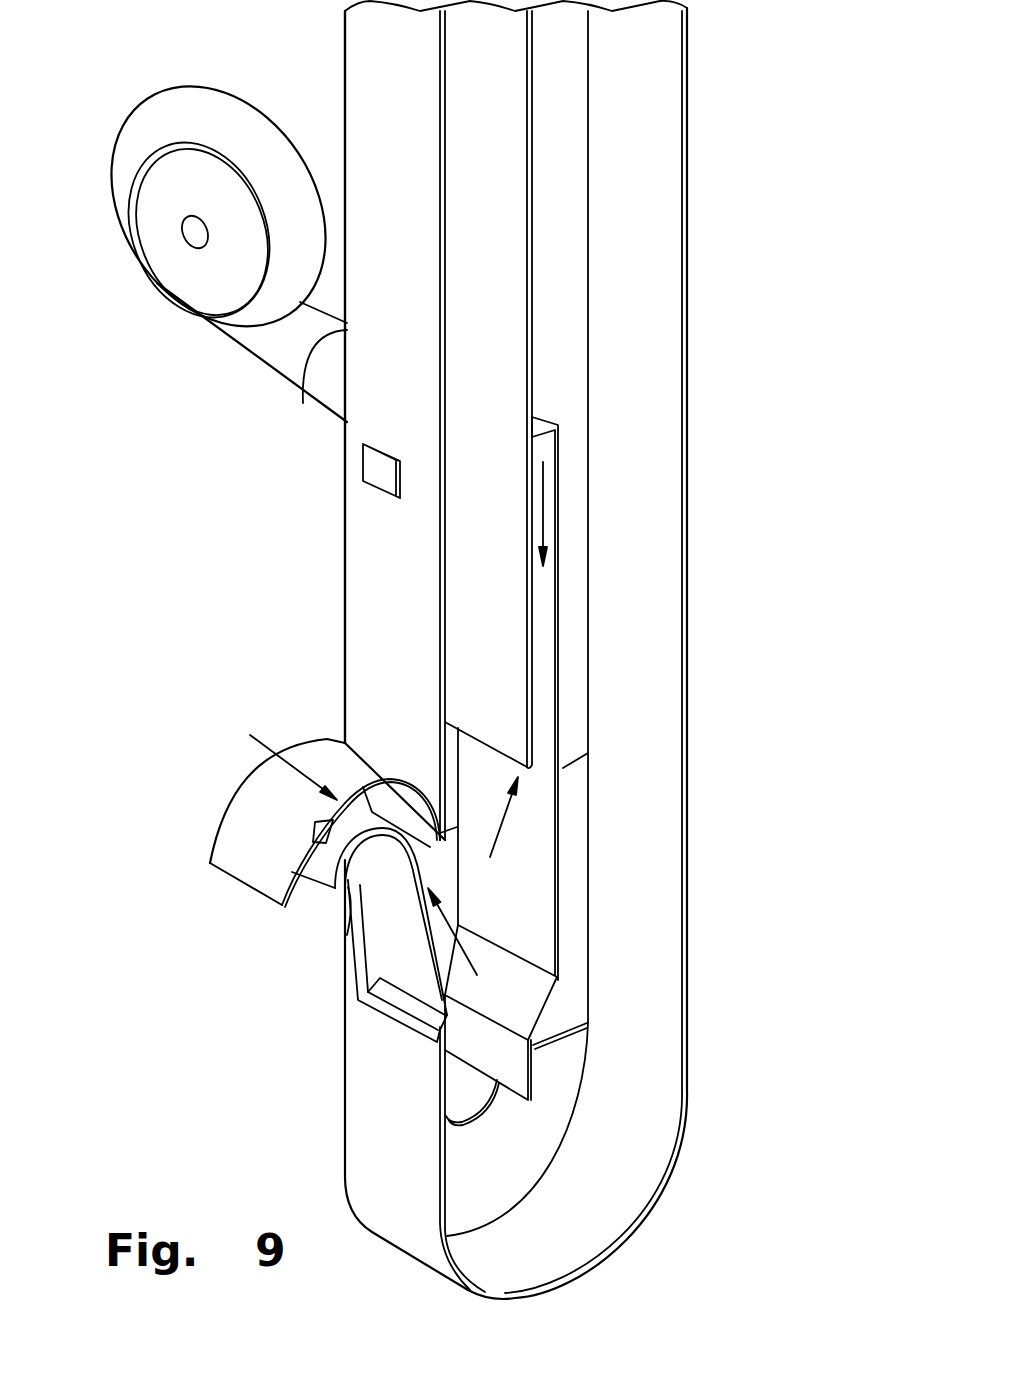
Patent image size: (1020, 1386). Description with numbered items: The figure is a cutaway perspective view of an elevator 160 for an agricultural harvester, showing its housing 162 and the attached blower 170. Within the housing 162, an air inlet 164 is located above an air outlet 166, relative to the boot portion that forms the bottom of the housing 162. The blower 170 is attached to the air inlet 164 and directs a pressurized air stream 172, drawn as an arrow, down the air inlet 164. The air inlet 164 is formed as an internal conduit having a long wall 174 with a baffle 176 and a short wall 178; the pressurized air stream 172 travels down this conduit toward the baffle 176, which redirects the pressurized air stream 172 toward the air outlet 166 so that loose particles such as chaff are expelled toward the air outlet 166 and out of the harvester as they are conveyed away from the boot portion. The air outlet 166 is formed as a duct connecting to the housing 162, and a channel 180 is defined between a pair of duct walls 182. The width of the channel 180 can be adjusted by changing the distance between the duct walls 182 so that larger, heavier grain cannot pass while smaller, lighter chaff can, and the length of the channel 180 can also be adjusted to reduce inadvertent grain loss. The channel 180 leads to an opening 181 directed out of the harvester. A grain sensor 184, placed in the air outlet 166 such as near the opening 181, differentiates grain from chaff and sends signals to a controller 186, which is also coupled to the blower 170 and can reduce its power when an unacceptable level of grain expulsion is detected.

The elevator 160 is at (740, 90).
The housing 162 is at (690, 233).
The air inlet 164 is at (491, 832).
The air outlet 166 is at (271, 755).
The blower 170 is at (160, 292).
The pressurized air stream 172 is at (543, 507).
The long wall 174 is at (560, 618).
The baffle 176 is at (518, 1003).
The short wall 178 is at (525, 592).
The channel 180 is at (383, 818).
The opening 181 is at (307, 893).
The duct walls 182 is at (333, 857).
The grain sensor 184 is at (318, 832).
The controller 186 is at (375, 475).